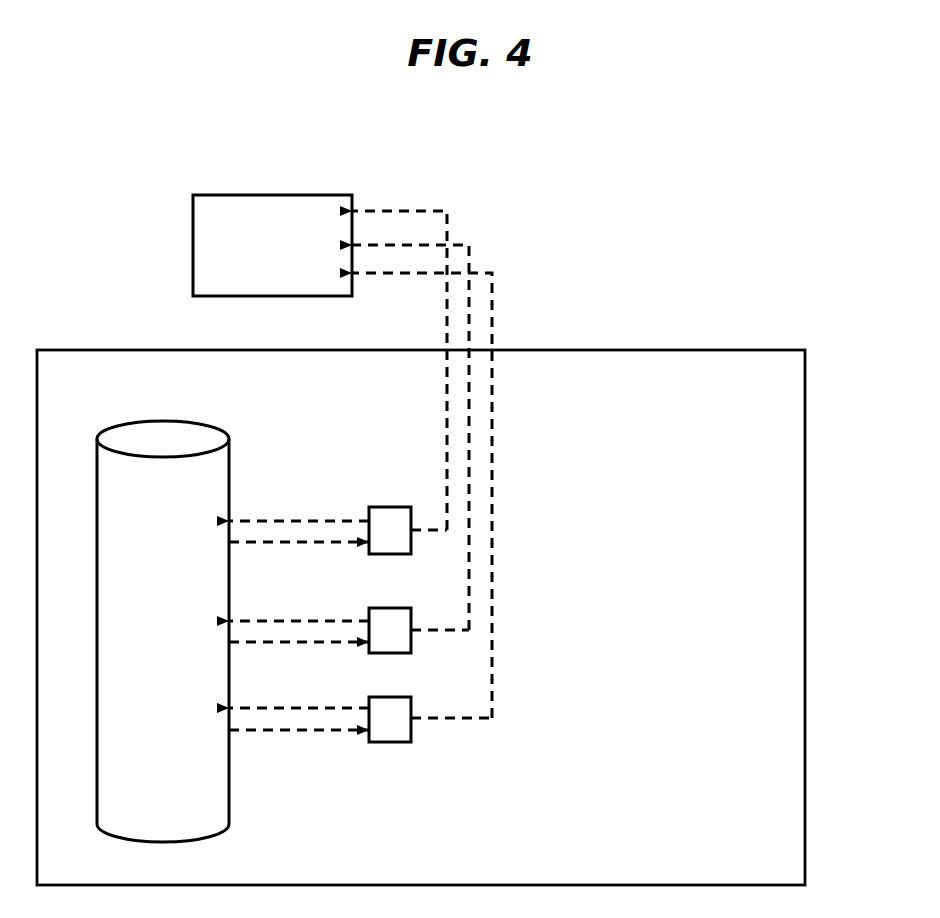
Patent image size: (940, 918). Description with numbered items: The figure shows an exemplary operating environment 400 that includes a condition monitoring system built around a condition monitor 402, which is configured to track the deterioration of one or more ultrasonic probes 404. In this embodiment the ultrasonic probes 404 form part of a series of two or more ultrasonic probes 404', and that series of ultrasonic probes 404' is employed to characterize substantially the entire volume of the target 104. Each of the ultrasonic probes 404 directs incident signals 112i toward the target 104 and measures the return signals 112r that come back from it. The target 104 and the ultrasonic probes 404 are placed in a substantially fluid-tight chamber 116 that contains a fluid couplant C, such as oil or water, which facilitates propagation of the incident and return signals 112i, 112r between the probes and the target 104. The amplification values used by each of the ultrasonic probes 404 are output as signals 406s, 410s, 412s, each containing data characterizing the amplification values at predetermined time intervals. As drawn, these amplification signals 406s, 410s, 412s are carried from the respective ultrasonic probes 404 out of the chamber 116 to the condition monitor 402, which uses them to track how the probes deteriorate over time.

The operating environment 400 is at (792, 309).
The condition monitor 402 is at (272, 245).
The target 104 is at (163, 631).
The substantially fluid-tight chamber 116 is at (808, 548).
The ultrasonic probes 404 is at (423, 670).
The series of two or more ultrasonic probes 404' is at (571, 623).
The amplification signals 406s is at (447, 211).
The amplification signals 410s is at (474, 253).
The amplification signals 412s is at (495, 318).
The incident signals 112i is at (307, 521).
The return signals 112r is at (318, 543).
The fluid couplant C is at (296, 579).